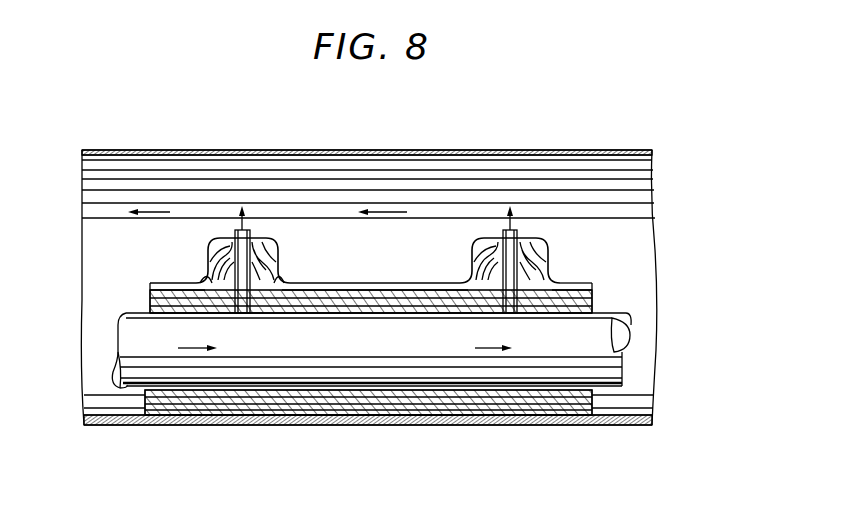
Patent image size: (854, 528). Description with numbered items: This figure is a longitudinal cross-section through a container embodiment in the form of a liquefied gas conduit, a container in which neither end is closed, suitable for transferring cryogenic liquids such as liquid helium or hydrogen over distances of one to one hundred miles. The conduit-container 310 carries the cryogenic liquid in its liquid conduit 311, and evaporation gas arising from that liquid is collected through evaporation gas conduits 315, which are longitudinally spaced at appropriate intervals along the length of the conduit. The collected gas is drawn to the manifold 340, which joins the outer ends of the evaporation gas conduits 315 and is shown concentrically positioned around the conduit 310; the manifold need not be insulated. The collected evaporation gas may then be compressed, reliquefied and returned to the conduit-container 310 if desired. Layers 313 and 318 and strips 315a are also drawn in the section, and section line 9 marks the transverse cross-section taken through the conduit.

The manifold 340 is at (457, 150).
The evaporation gas conduit 315 is at (250, 233).
The laminate layer 318 is at (348, 290).
The insulation layer 313 is at (438, 288).
The conduit-container 310 is at (350, 432).
The liquid conduit 311 is at (442, 376).
The layer strips 315a is at (538, 390).
The section line 9- 9 is at (214, 113).